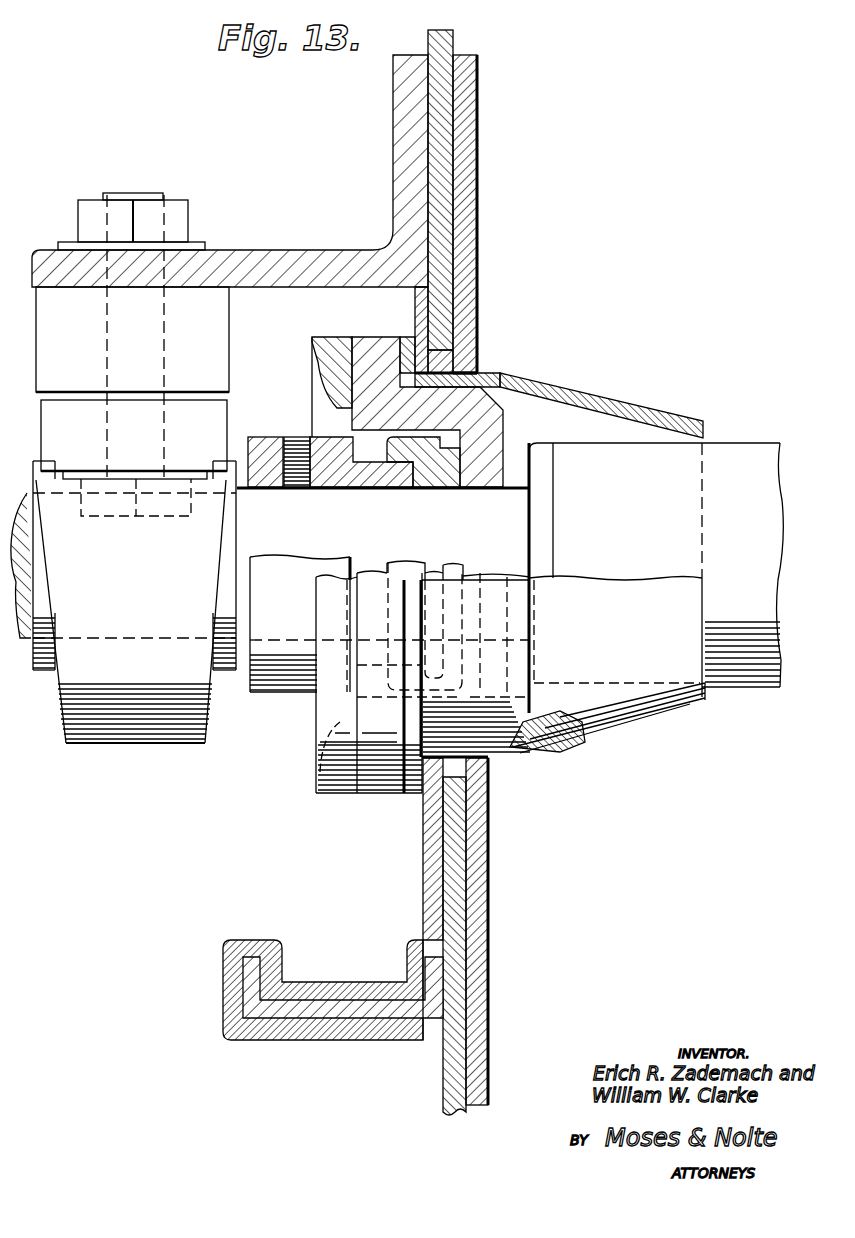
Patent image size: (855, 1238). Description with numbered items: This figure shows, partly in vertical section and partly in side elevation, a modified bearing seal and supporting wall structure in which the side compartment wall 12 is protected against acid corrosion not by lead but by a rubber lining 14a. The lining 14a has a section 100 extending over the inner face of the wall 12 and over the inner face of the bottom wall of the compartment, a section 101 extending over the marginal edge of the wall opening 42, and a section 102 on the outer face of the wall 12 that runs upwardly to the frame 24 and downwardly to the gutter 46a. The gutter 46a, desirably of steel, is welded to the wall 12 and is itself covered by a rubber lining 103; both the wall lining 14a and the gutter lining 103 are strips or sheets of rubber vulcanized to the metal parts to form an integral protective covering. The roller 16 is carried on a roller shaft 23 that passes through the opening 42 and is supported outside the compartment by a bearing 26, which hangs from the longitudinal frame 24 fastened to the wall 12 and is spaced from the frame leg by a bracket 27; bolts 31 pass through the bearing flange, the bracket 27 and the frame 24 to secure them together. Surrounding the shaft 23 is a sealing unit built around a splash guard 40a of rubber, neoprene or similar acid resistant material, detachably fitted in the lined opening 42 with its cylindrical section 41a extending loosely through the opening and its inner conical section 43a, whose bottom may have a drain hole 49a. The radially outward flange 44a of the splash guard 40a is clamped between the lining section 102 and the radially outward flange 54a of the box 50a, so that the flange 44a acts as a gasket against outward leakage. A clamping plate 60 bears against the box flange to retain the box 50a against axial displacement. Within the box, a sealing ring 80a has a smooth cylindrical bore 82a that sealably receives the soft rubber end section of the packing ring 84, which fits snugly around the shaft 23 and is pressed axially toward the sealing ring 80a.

The side compartment wall 12 is at (437, 43).
The rubber lining 14a is at (479, 88).
The roller 16 is at (737, 443).
The roller shaft 23 is at (27, 521).
The longitudinal frame 24 is at (300, 258).
The bearing 26 is at (143, 740).
The bracket 27 is at (222, 362).
The bolt 31 is at (118, 197).
The splash guard 40a is at (598, 394).
The cylindrical section 41a is at (515, 373).
The wall opening 42 is at (480, 333).
The conical section 43a is at (613, 729).
The splash guard flange 44a is at (412, 335).
The gutter 46a is at (333, 1008).
The drain hole 49a is at (545, 746).
The box 50a is at (505, 434).
The box flange 54a is at (348, 335).
The clamping plate 60 is at (328, 769).
The sealing ring 80a is at (447, 467).
The smooth cylindrical bore 82a is at (407, 470).
The packing ring 84 is at (377, 480).
The lining section 100 is at (480, 235).
The lining section 101 is at (478, 358).
The lining section 102 is at (415, 300).
The gutter lining 103 is at (282, 956).